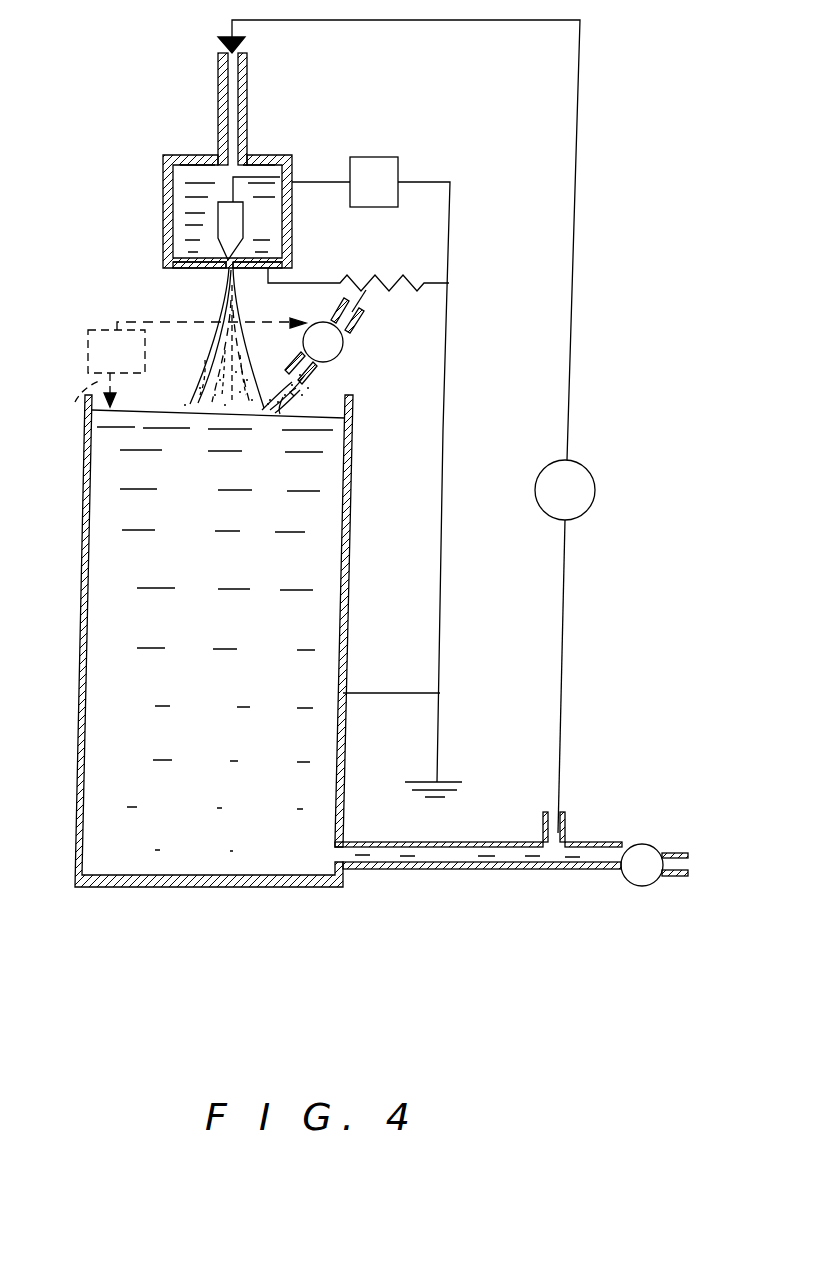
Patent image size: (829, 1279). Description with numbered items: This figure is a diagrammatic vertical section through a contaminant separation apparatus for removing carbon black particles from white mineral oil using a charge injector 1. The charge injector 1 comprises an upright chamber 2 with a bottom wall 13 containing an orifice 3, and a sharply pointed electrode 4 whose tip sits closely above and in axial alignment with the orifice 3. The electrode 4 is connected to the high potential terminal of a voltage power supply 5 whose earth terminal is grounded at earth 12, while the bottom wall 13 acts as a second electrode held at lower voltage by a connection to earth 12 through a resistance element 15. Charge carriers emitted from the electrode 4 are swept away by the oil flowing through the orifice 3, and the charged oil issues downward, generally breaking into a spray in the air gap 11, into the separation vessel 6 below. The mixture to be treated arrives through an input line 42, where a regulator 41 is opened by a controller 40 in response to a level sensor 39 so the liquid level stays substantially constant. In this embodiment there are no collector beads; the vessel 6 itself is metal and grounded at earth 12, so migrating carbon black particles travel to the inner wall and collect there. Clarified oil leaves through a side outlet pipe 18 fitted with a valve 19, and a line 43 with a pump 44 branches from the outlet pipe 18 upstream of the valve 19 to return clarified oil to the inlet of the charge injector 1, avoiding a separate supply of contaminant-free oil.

The charge injector 1 is at (161, 211).
The chamber 2 is at (173, 266).
The orifice 3 is at (233, 270).
The pointed electrode 4 is at (237, 225).
The voltage power supply 5 is at (407, 150).
The separation vessel 6 is at (74, 700).
The air gap 11 is at (192, 381).
The earth 12 is at (446, 782).
The bottom wall 13 is at (207, 268).
The resistance element 15 is at (381, 272).
The outlet pipe 18 is at (688, 855).
The valve 19 is at (650, 884).
The level sensor 39 is at (81, 401).
The controller 40 is at (86, 348).
The regulator 41 is at (343, 342).
The input line 42 is at (306, 393).
The line 43 is at (566, 824).
The pump 44 is at (584, 514).